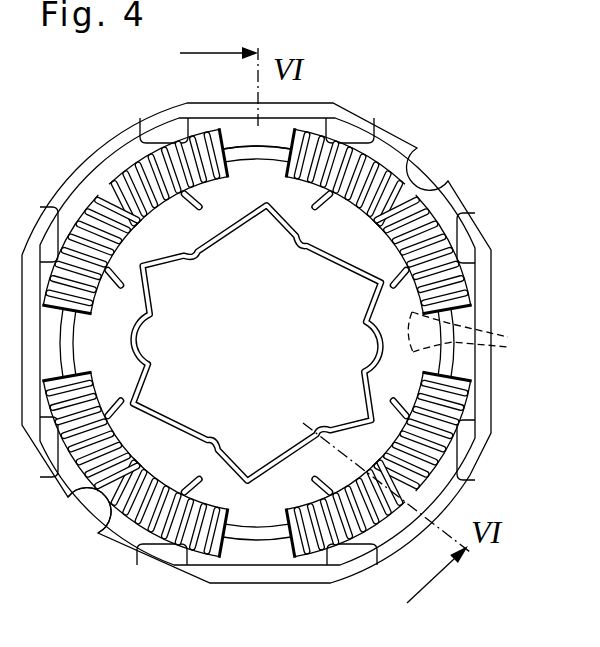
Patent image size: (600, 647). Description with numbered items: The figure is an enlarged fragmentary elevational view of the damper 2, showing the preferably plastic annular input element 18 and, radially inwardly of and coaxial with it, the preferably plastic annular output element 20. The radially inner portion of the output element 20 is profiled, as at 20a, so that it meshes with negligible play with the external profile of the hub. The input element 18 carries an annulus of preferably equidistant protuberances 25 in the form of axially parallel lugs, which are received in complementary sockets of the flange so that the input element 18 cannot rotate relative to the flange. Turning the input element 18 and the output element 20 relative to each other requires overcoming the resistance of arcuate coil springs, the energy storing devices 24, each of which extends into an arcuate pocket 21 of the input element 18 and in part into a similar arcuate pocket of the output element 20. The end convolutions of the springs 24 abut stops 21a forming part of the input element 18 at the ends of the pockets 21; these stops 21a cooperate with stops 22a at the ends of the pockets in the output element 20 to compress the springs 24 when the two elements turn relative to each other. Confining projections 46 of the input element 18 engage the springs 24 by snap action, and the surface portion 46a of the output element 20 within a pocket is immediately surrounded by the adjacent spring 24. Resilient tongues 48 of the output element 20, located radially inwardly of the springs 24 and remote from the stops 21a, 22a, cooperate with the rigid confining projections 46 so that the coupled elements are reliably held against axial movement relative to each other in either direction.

The damper 2 is at (288, 342).
The annular input element 18 is at (113, 147).
The annular output element 20 is at (310, 323).
The profiled radially inner portion 20a is at (158, 425).
The arcuate pocket 21 is at (408, 168).
The stop 21a is at (277, 143).
The stop 22a is at (252, 167).
The energy storing device 24 is at (87, 498).
The protuberance 25 is at (170, 127).
The confining projection 46 is at (103, 195).
The surface portion within pocket 46a is at (470, 341).
The resilient tongue 48 is at (345, 213).